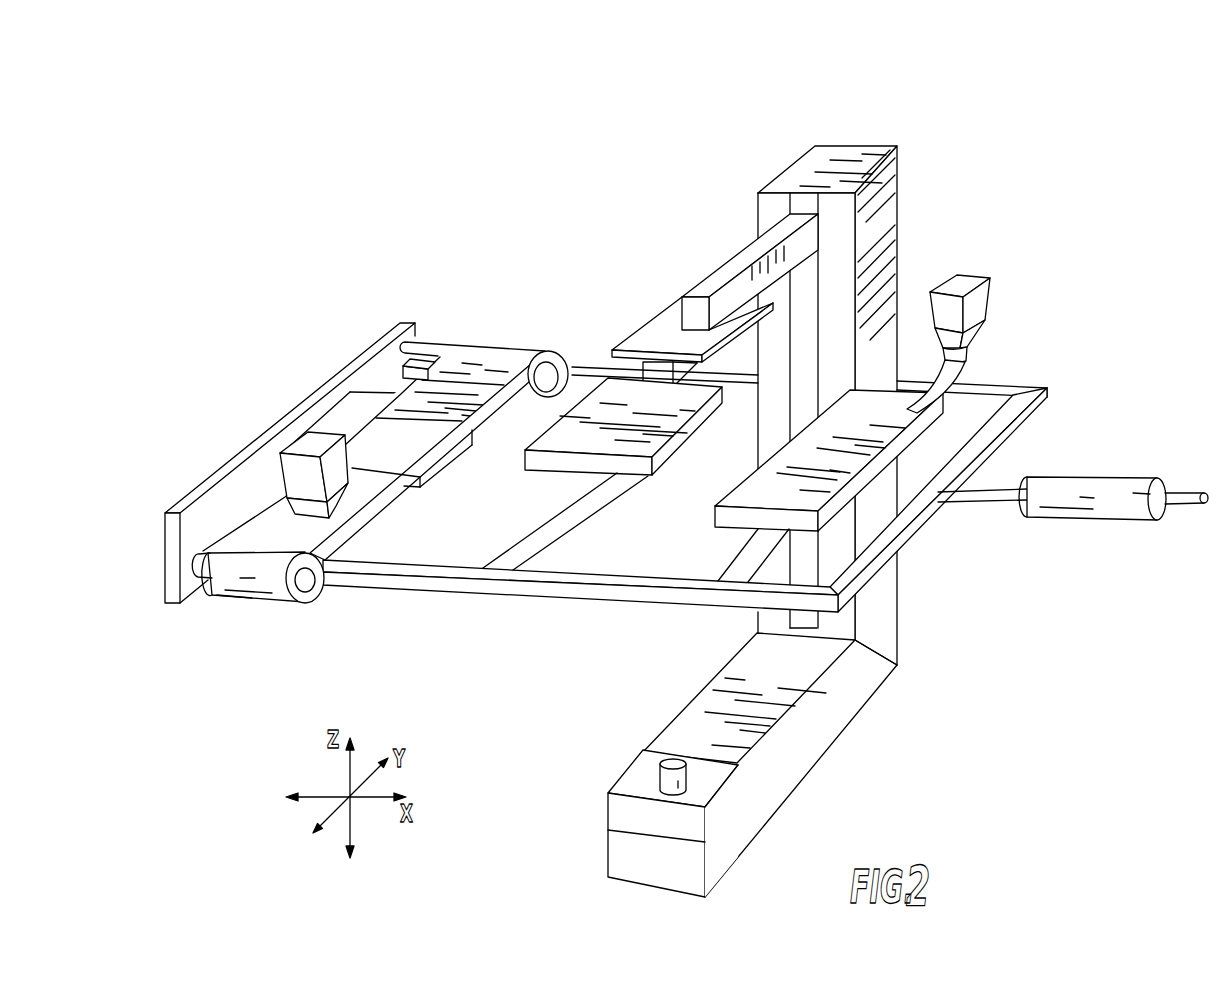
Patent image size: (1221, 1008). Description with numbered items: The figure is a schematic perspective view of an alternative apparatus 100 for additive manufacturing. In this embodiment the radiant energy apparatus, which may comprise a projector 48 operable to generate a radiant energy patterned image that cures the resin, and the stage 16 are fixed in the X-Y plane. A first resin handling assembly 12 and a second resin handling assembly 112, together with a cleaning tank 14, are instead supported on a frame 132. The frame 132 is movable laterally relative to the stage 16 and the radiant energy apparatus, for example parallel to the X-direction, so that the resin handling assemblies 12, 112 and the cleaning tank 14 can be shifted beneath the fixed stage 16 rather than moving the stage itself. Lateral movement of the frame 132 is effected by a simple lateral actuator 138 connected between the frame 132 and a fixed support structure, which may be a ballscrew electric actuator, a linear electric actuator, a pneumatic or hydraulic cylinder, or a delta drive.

The apparatus 100 is at (912, 82).
The first resin handling assembly 12 is at (402, 492).
The cleaning tank 14 is at (636, 466).
The stage 16 is at (662, 332).
The second resin handling assembly 112 is at (716, 538).
The frame 132 is at (1013, 390).
The lateral actuator 138 is at (1087, 510).
The projector 48 is at (622, 817).